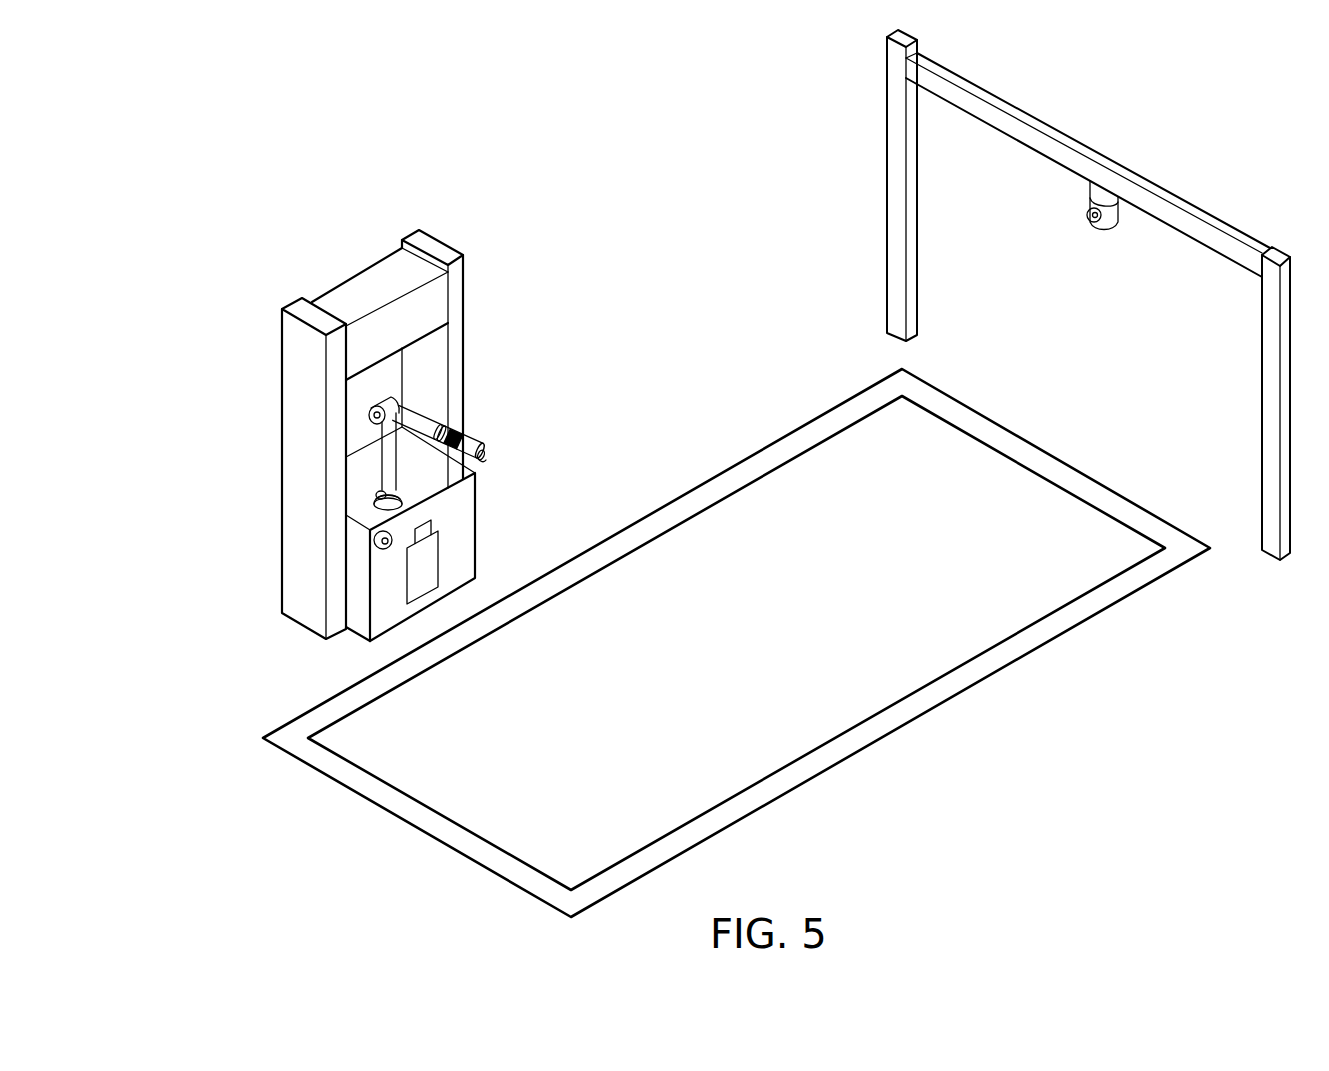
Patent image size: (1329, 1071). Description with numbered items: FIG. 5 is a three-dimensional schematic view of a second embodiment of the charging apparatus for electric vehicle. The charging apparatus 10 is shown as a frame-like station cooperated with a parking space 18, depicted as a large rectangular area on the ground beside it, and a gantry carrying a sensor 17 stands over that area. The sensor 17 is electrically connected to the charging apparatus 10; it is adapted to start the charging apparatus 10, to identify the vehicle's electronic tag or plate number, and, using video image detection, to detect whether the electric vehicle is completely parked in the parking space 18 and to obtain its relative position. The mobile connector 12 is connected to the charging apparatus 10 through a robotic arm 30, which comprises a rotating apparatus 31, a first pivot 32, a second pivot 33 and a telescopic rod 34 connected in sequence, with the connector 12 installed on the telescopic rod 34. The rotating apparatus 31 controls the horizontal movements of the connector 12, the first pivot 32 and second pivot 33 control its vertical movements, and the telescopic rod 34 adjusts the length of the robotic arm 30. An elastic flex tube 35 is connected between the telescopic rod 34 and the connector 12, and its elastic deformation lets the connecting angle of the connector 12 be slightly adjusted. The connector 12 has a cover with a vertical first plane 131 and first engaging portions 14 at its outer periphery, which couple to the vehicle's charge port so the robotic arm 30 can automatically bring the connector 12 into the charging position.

The charging apparatus 10 is at (293, 631).
The connector 12 is at (480, 436).
The first engaging portion 14 is at (485, 446).
The sensor 17 is at (1106, 228).
The parking space 18 is at (1020, 655).
The robotic arm 30 is at (400, 448).
The rotating apparatus 31 is at (373, 538).
The first pivot 32 is at (373, 492).
The second pivot 33 is at (373, 413).
The telescopic rod 34 is at (440, 415).
The elastic flex tube 35 is at (463, 427).
The first plane 131 is at (529, 492).